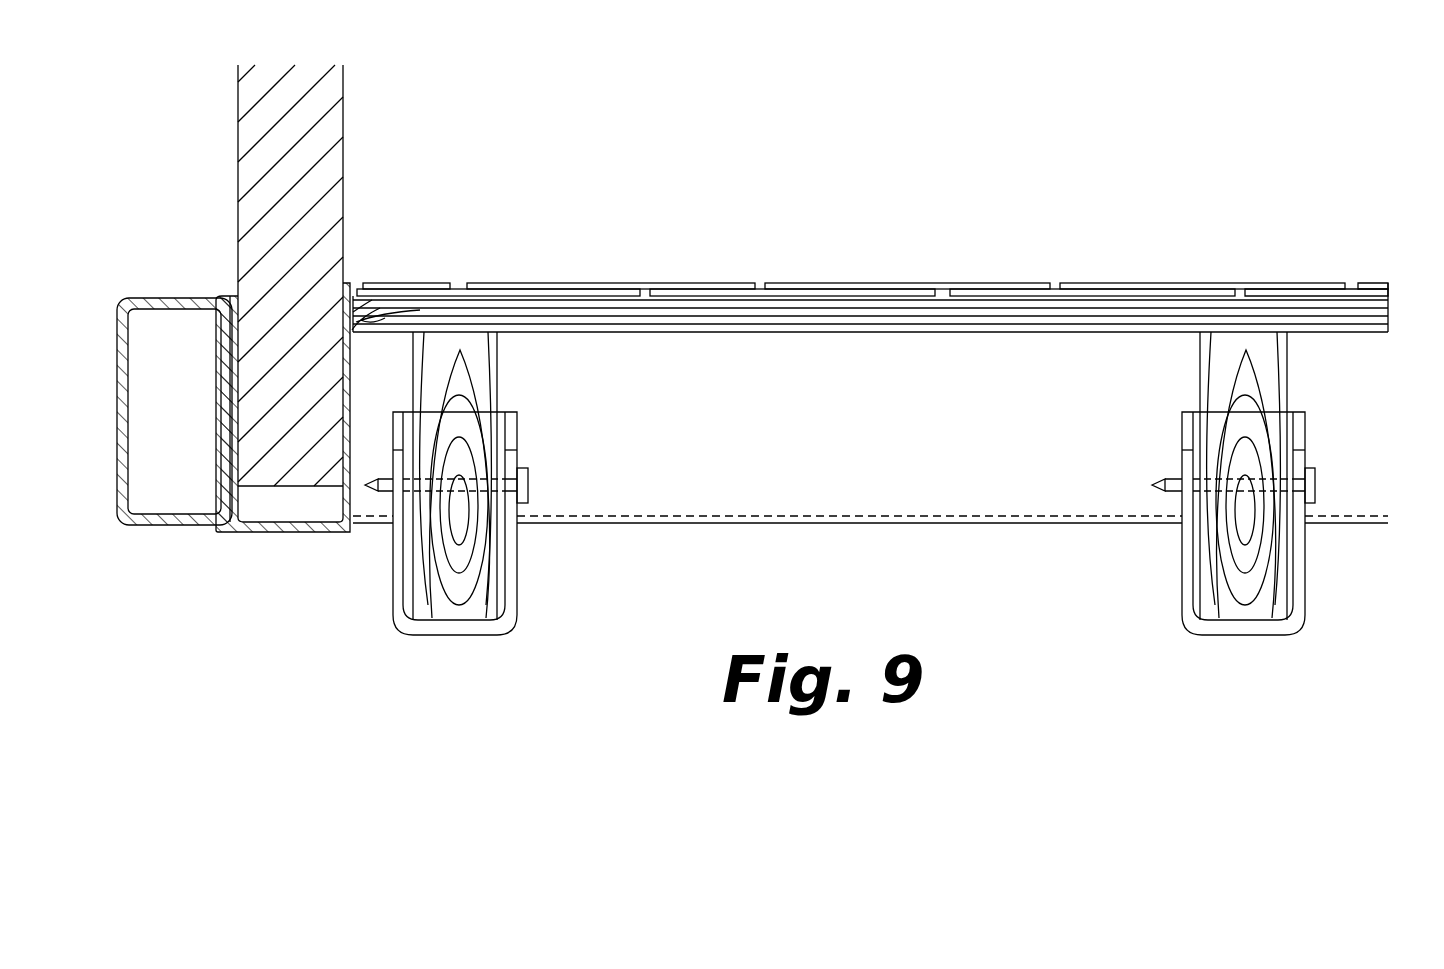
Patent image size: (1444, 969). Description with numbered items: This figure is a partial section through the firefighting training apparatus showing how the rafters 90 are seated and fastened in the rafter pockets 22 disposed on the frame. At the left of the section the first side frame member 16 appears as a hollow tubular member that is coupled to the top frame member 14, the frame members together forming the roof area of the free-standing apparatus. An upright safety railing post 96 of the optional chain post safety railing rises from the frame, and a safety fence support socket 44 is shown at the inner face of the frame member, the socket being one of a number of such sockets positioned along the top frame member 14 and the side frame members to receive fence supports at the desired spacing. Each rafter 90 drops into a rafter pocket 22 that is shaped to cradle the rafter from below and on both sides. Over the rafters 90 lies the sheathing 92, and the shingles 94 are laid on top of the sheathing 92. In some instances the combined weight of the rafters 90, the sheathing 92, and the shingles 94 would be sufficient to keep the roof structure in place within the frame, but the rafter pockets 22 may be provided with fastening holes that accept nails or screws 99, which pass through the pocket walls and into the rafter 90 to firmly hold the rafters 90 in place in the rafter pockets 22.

The top frame member 14 is at (935, 470).
The first side frame member 16 is at (173, 298).
The rafter pocket 22 is at (518, 580).
The safety fence support socket 44 is at (308, 517).
The rafter 90 is at (500, 378).
The sheathing 92 is at (1390, 311).
The shingles 94 is at (845, 283).
The upright safety railing post 96 is at (345, 160).
The nails or screws 99 is at (528, 485).